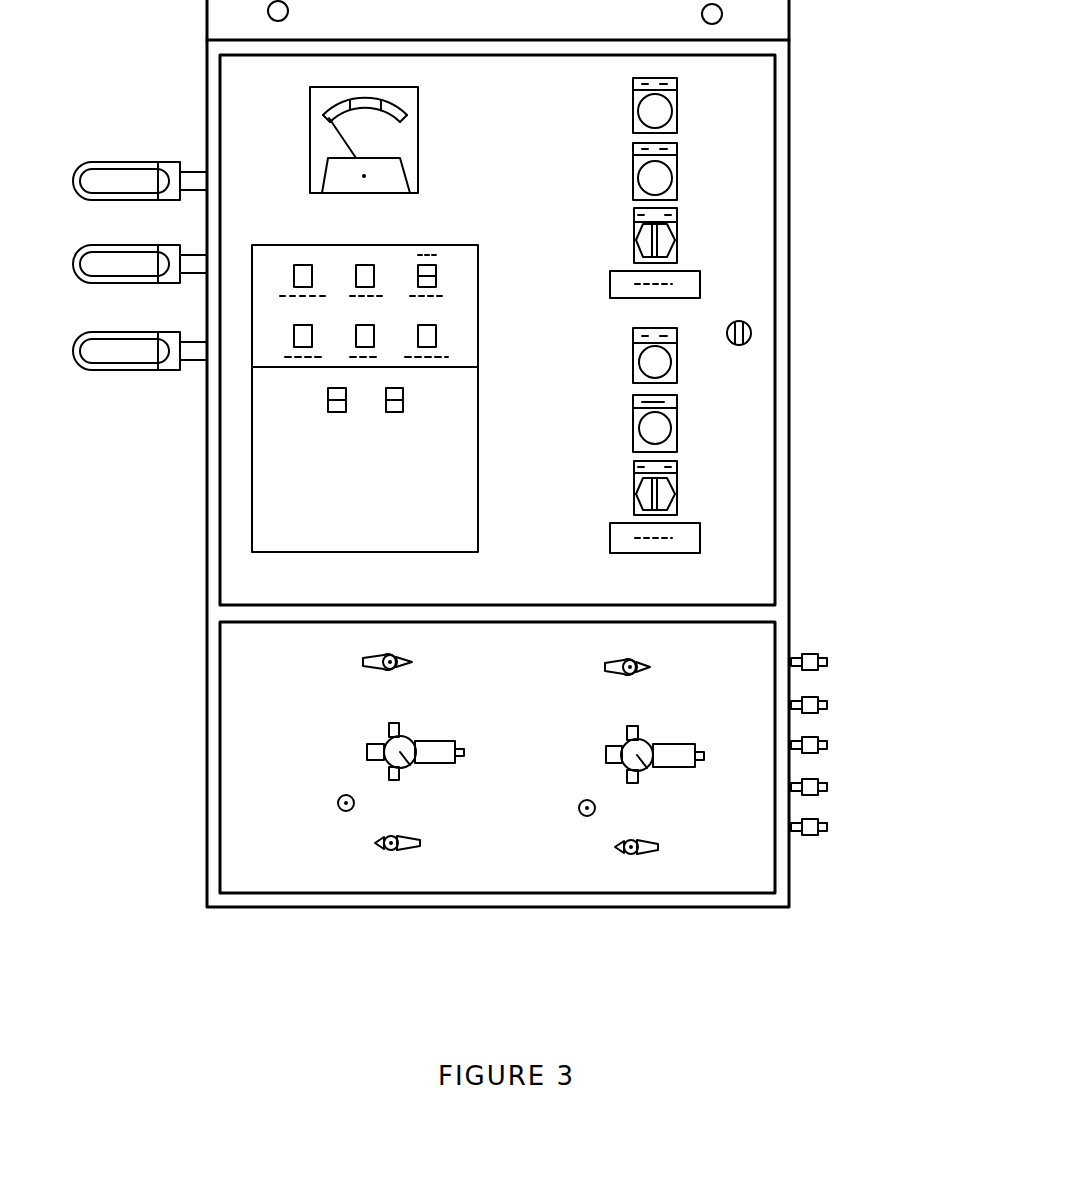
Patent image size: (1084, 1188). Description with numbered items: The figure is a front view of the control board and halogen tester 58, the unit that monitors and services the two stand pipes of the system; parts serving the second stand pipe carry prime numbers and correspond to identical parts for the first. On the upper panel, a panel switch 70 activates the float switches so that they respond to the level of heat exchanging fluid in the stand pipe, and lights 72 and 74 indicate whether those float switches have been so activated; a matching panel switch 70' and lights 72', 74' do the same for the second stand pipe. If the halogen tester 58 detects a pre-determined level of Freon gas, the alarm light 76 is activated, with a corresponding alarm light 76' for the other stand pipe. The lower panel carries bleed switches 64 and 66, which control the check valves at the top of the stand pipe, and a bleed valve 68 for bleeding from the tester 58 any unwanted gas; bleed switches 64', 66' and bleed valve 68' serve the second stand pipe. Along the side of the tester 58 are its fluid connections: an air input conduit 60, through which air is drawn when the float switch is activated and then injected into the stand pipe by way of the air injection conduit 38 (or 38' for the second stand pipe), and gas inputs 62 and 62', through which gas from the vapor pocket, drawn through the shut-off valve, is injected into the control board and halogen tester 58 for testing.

The control board and halogen tester 58 is at (799, 368).
The light 72 is at (612, 105).
The light 74 is at (615, 171).
The panel switch 70 is at (617, 235).
The light 72' is at (620, 355).
The light 74' is at (621, 423).
The panel switch 70' is at (619, 488).
The alarm light 76 is at (318, 436).
The alarm light 76' is at (423, 435).
The bleed switch 64 is at (425, 662).
The bleed switch 64' is at (673, 662).
The bleed switch 66 is at (431, 861).
The bleed switch 66' is at (675, 862).
The bleed valve 68 is at (367, 767).
The bleed valve 68' is at (609, 771).
The air injection conduit 38 is at (857, 660).
The air injection conduit 38' is at (862, 706).
The air input conduit 60 is at (828, 745).
The gas input 62 is at (858, 797).
The gas input 62' is at (862, 842).